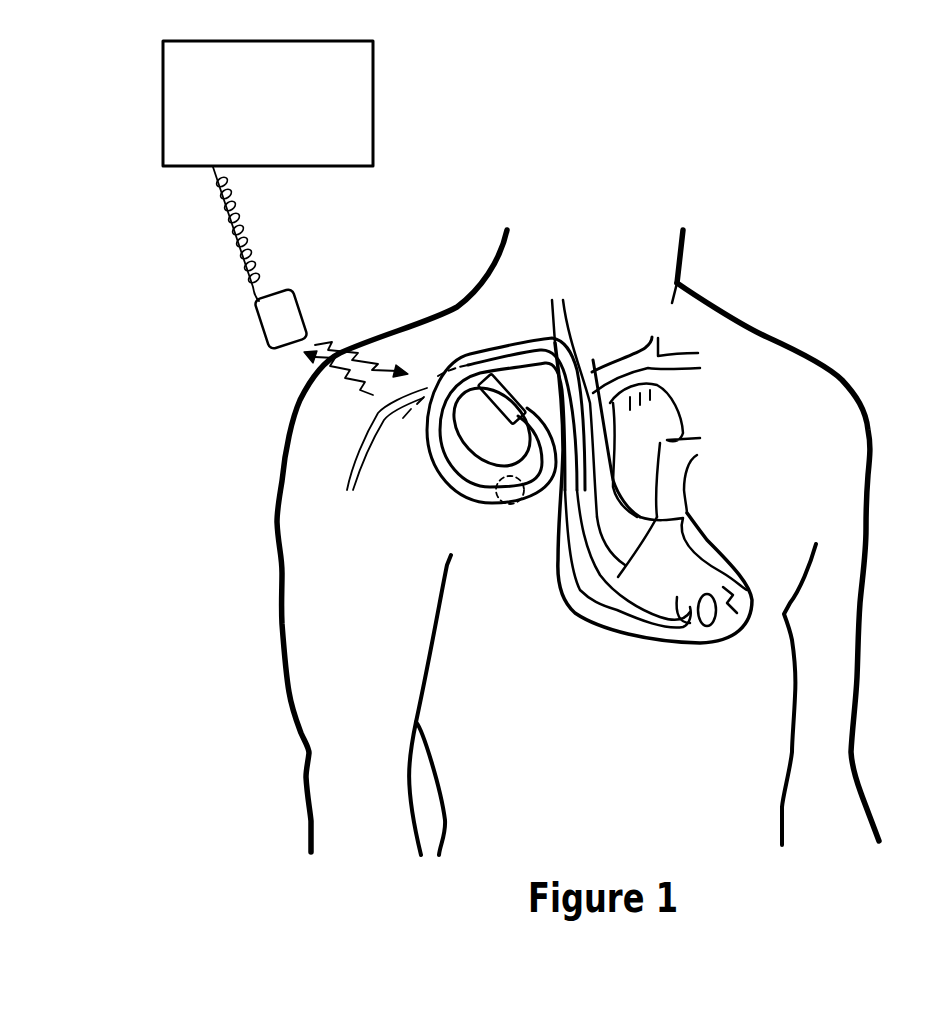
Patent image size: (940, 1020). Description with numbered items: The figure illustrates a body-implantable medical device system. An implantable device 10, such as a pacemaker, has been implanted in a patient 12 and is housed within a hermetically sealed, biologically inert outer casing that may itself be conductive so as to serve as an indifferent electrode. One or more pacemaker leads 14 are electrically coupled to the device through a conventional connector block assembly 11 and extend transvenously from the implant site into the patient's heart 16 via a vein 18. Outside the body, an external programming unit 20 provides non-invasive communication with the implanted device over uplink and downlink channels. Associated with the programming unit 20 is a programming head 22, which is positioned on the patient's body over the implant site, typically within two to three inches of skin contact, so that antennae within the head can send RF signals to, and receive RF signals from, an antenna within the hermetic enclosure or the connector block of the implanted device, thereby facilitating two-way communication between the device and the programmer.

The implantable device 10 is at (472, 450).
The connector block assembly 11 is at (493, 388).
The patient 12 is at (793, 346).
The pacemaker leads 14 is at (518, 505).
The heart 16 is at (672, 643).
The vein 18 is at (441, 367).
The external programming unit 20 is at (373, 88).
The programming head 22 is at (290, 303).